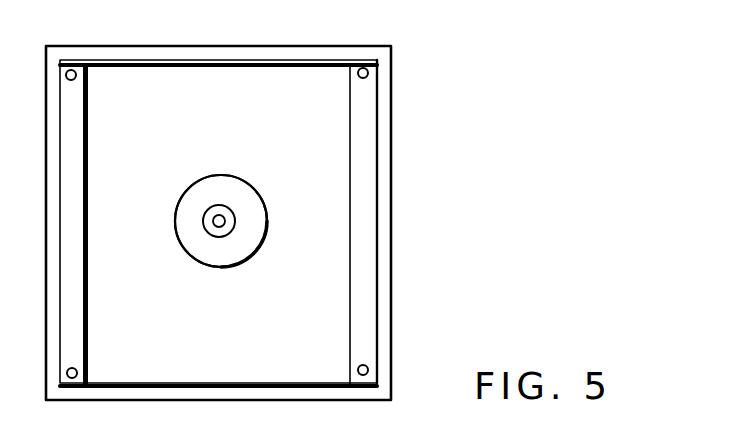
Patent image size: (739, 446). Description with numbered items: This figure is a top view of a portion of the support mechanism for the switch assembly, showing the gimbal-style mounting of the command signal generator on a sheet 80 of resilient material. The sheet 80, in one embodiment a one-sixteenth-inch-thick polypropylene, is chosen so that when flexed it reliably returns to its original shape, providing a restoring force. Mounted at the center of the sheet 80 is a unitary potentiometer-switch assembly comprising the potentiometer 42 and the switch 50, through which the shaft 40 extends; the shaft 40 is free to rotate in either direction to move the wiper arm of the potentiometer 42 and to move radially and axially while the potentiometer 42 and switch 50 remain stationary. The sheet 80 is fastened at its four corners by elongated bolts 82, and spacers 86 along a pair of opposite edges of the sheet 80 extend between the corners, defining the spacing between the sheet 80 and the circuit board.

The shaft 40 is at (231, 213).
The potentiometer 42 is at (237, 262).
The switch 50 is at (221, 221).
The sheet 80 is at (173, 341).
The elongated bolts 82 is at (368, 370).
The spacers 86 is at (367, 194).